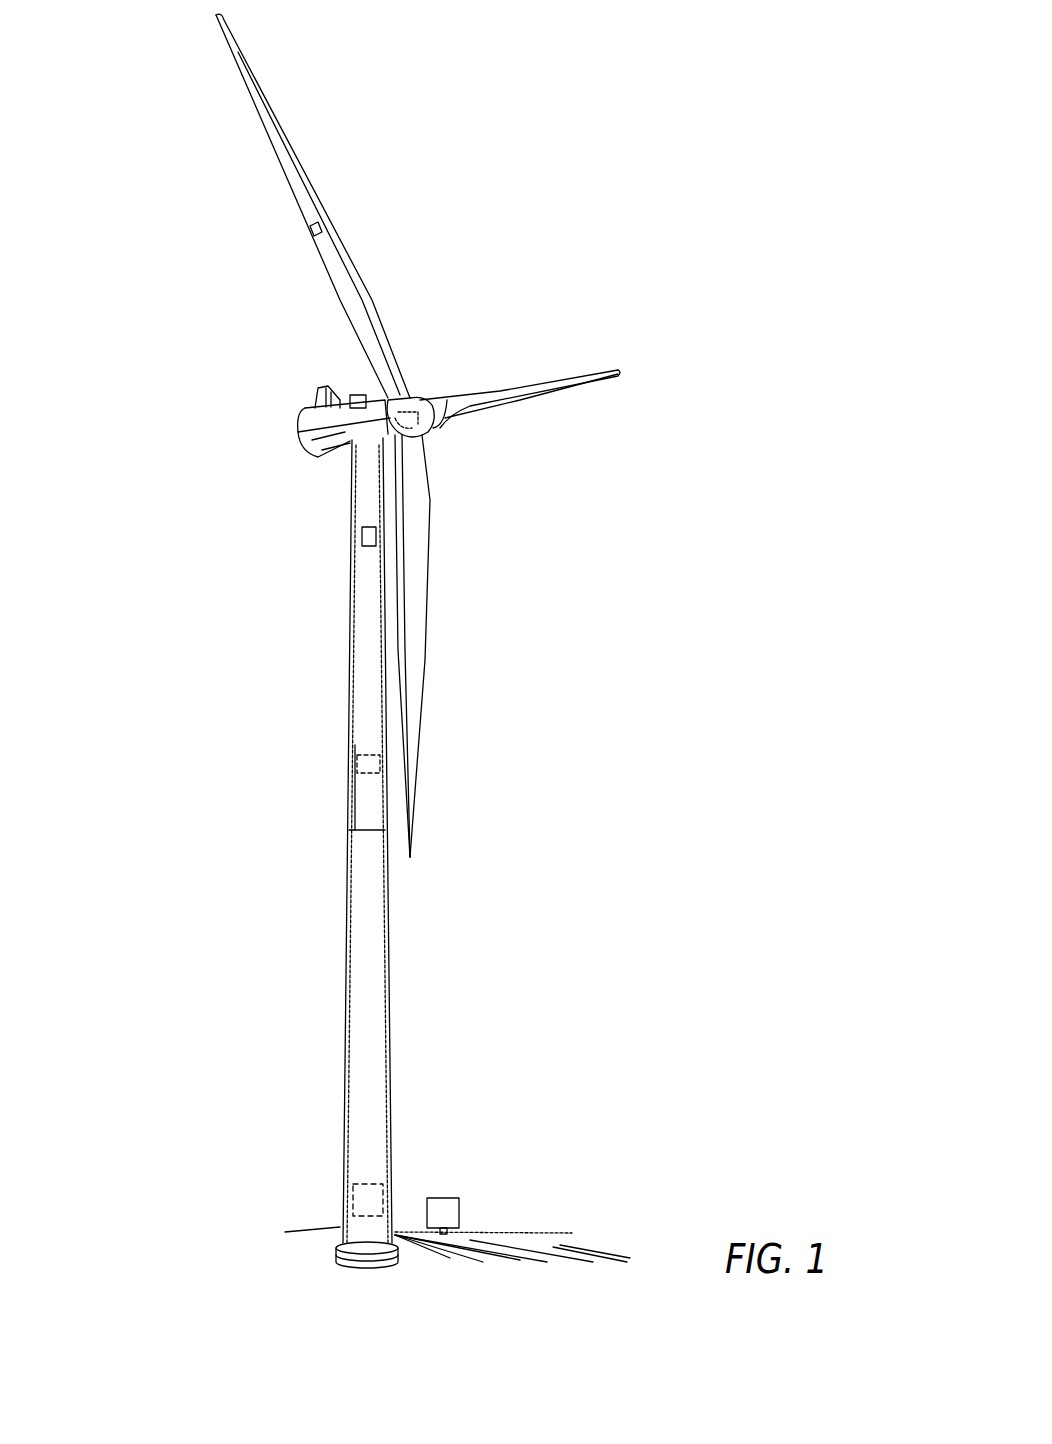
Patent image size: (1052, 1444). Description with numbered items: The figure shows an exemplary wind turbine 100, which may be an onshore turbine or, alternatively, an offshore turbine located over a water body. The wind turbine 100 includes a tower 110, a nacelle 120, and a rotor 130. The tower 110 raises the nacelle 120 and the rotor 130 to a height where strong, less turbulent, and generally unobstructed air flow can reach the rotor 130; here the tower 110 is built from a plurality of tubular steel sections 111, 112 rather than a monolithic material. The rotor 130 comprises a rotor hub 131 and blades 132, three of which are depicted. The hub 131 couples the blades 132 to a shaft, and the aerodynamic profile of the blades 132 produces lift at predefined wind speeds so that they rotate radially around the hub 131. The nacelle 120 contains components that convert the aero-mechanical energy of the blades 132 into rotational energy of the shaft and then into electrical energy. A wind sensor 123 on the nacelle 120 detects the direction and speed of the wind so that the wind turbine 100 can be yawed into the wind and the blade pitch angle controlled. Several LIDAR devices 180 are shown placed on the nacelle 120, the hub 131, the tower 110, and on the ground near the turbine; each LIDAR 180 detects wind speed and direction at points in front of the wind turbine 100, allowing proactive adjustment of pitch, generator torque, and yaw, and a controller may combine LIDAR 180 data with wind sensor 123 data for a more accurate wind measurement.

The wind turbine 100 is at (517, 275).
The tower 110 is at (314, 853).
The tubular steel section 111 is at (353, 1033).
The tubular steel section 112 is at (358, 620).
The nacelle 120 is at (284, 407).
The wind sensor 123 is at (325, 390).
The rotor 130 is at (406, 435).
The rotor hub 131 is at (420, 398).
The blade 132 is at (257, 107).
The LIDAR device 180 is at (352, 393).